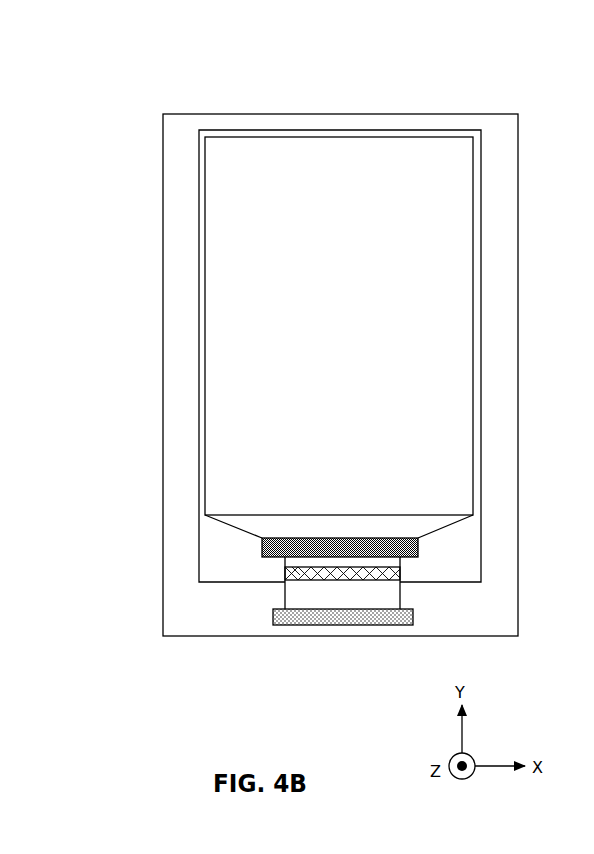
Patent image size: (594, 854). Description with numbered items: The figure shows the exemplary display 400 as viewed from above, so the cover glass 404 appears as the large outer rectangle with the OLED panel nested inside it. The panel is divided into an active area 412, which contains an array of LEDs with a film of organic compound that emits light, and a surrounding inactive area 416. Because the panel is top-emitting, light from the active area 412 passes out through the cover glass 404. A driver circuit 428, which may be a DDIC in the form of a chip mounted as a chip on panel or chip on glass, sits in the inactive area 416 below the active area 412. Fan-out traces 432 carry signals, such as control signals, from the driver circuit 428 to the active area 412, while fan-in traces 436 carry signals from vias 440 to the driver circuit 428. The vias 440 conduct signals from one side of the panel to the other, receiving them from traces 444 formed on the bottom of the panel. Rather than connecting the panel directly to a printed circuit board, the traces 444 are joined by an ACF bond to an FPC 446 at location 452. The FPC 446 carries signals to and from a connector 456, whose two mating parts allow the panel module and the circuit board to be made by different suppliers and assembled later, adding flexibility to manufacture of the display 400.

The display device 400 is at (497, 74).
The cover glass 404 is at (170, 133).
The active area 412 is at (306, 170).
The inactive area 416 is at (218, 547).
The driver circuit 428 is at (290, 537).
The fan-out traces 432 is at (407, 527).
The fan-in traces 436 is at (305, 602).
The vias 440 is at (218, 631).
The traces 444 is at (218, 631).
The location 452 is at (285, 567).
The FPC 446 is at (304, 596).
The connector 456 is at (370, 620).